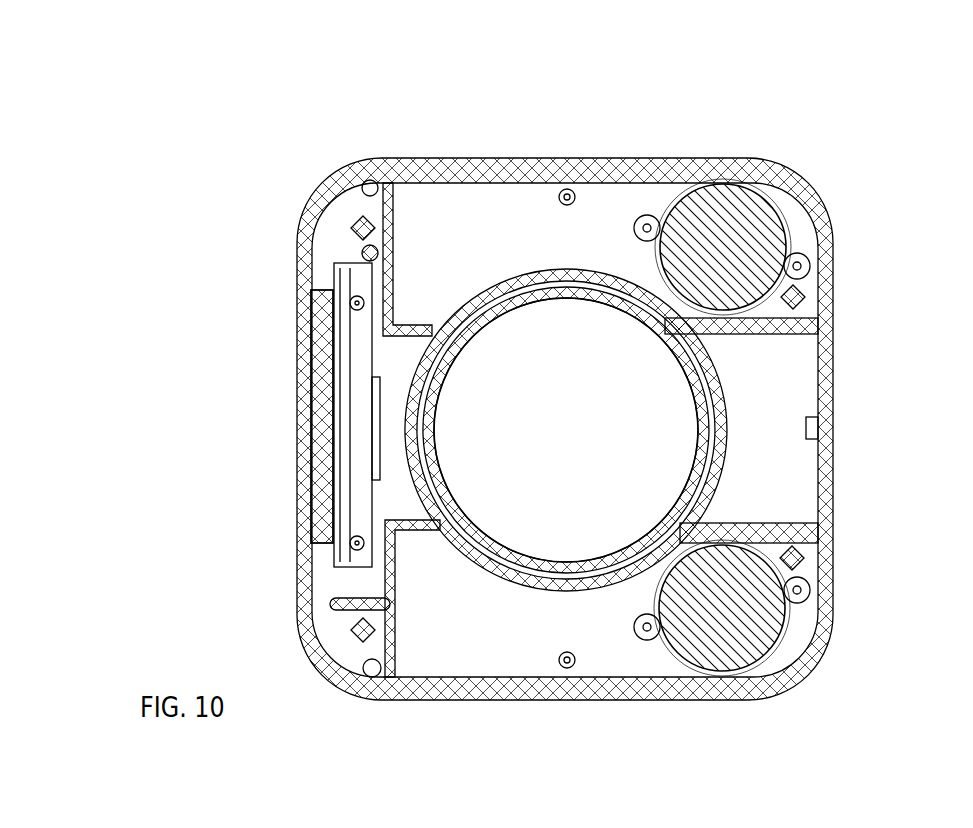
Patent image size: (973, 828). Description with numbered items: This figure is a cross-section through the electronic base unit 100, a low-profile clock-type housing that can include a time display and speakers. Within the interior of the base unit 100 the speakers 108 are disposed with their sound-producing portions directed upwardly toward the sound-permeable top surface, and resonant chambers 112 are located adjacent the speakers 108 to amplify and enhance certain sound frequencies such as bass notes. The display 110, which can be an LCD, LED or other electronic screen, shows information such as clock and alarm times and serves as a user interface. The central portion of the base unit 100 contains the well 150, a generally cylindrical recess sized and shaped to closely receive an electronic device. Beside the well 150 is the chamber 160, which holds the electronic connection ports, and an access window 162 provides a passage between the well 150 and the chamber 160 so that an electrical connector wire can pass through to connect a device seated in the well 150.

The electronic base unit 100 is at (437, 128).
The speakers 108 is at (697, 258).
The display 110 is at (305, 440).
The resonant chambers 112 is at (561, 240).
The well 150 is at (553, 490).
The chamber 160 is at (785, 378).
The access window 162 is at (700, 430).